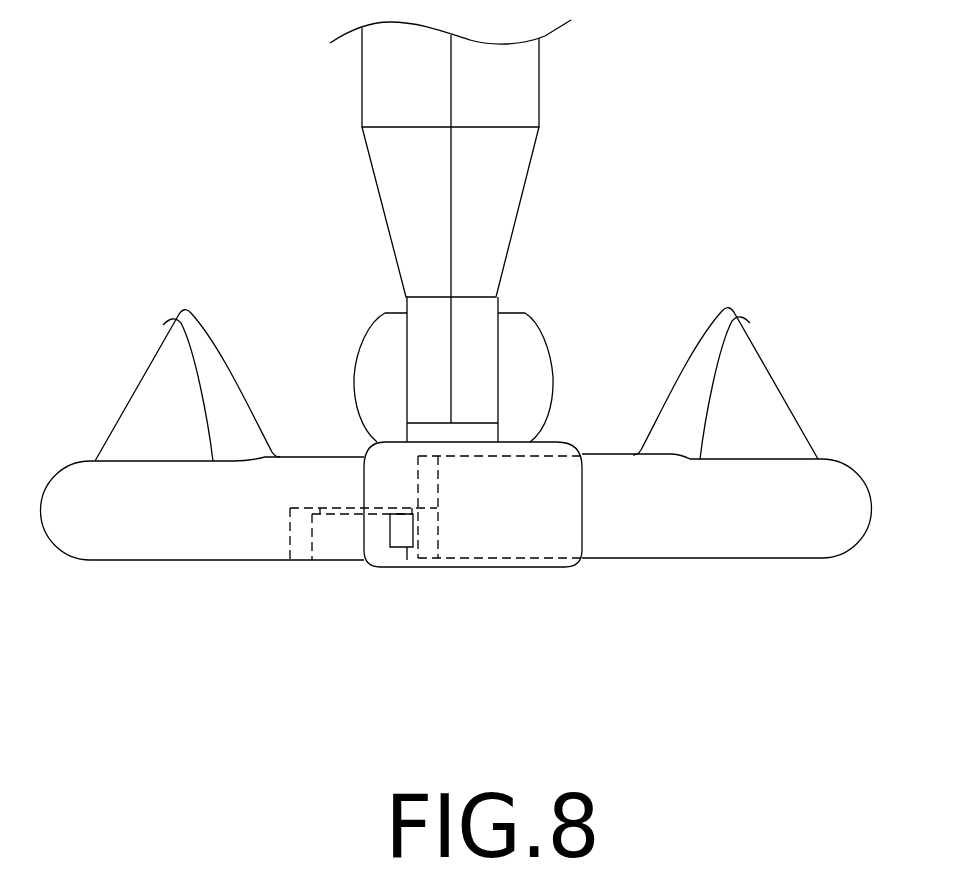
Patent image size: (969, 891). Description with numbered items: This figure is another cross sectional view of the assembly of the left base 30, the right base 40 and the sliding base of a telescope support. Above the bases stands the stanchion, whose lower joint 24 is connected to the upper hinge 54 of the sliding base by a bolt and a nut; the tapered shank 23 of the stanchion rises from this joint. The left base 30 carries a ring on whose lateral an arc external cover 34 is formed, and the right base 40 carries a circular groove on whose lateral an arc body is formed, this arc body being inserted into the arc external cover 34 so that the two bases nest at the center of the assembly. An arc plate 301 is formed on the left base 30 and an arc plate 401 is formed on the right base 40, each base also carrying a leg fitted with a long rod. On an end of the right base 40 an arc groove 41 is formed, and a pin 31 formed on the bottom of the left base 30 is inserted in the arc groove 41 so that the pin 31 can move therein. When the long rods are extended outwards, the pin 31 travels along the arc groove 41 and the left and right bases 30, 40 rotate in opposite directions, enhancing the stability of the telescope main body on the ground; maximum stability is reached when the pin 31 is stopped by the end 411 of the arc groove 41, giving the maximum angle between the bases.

The tapered shank of the connecting post 23 is at (510, 162).
The lower joint 24 is at (478, 320).
The upper hinge 54 is at (382, 330).
The left base 30 is at (168, 545).
The arc plate 301 is at (160, 362).
The right base 40 is at (805, 547).
The arc plate 401 is at (753, 373).
The arc external cover 34 is at (551, 543).
The arc groove 41 is at (342, 548).
The end of the arc groove 411 is at (427, 527).
The pin 31 is at (405, 553).